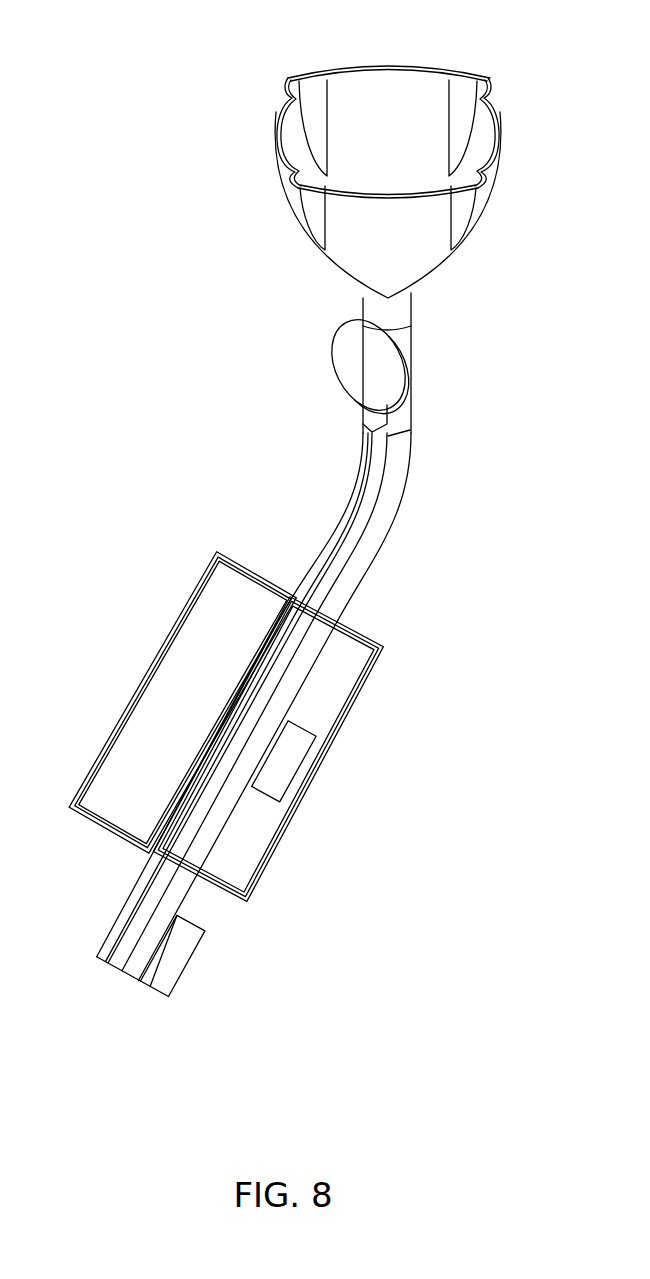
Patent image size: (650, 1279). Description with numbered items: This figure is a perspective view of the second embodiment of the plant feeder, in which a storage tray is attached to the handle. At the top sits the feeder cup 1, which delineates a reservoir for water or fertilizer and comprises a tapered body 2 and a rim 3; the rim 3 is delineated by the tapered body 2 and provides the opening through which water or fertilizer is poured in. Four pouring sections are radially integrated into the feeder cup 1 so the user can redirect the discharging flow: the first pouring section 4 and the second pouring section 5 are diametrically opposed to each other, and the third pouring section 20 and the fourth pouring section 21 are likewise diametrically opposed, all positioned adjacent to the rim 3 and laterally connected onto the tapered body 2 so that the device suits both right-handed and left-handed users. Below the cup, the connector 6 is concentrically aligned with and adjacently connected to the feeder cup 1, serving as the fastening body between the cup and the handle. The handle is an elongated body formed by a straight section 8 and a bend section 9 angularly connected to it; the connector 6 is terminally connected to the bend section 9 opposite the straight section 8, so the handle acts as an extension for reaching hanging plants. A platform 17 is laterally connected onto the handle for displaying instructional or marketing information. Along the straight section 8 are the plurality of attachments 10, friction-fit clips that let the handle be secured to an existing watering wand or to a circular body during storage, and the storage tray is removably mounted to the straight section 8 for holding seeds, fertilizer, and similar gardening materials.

The feeder cup 1 is at (243, 183).
The tapered body 2 is at (338, 267).
The rim 3 is at (413, 66).
The first pouring section 4 is at (299, 212).
The second pouring section 5 is at (488, 94).
The connector 6 is at (407, 307).
The straight section 8 is at (113, 928).
The bend section 9 is at (397, 485).
The plurality of attachments 10 is at (288, 757).
The platform 17 is at (343, 368).
The third pouring section 20 is at (478, 218).
The fourth pouring section 21 is at (288, 94).